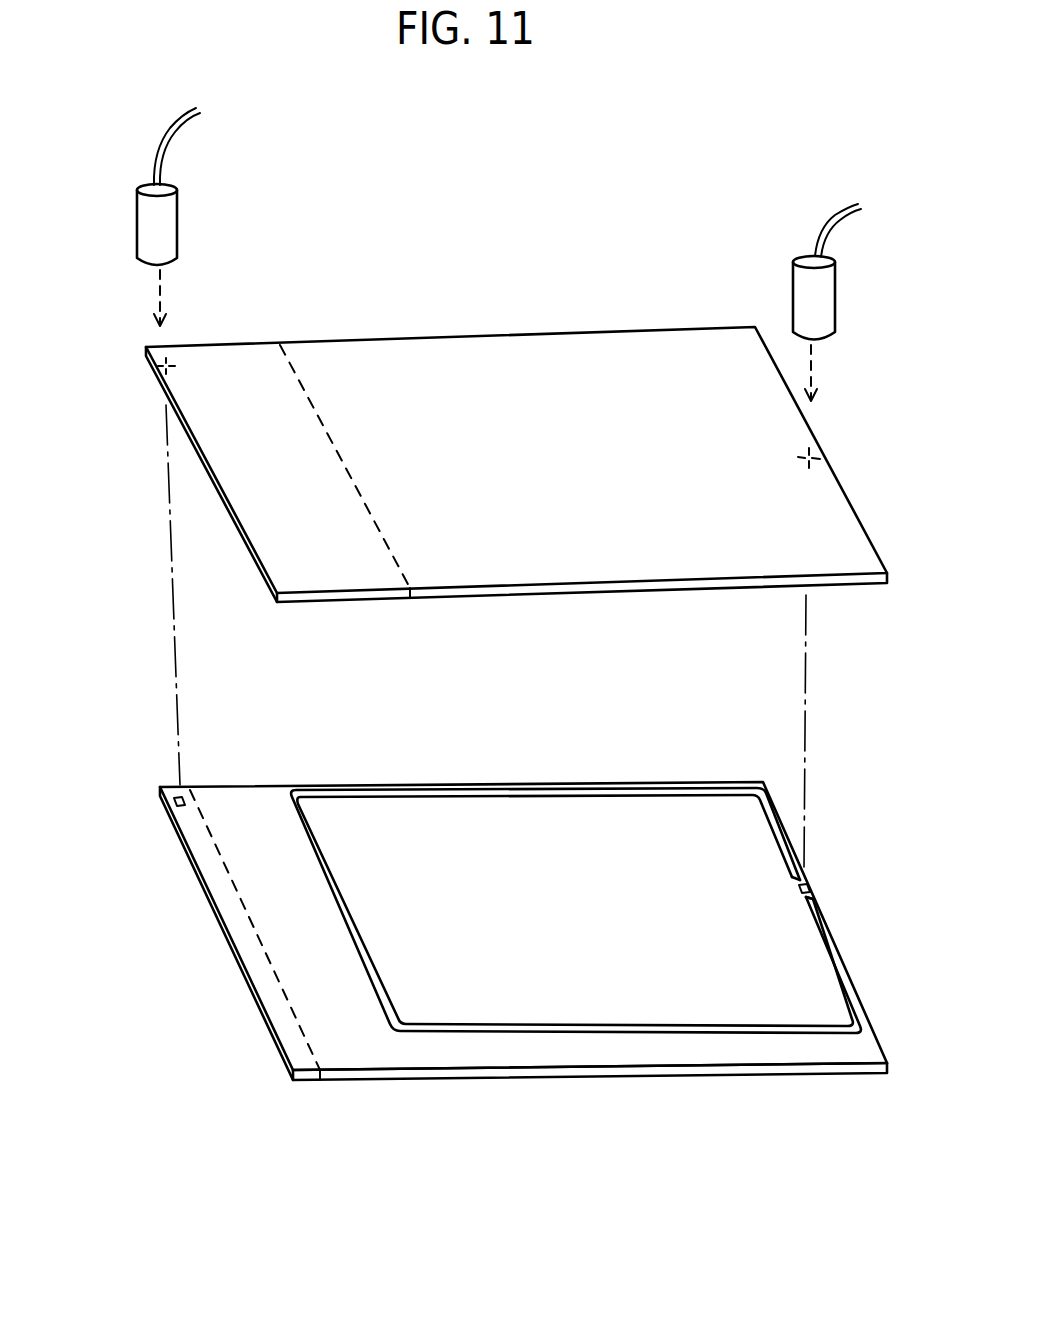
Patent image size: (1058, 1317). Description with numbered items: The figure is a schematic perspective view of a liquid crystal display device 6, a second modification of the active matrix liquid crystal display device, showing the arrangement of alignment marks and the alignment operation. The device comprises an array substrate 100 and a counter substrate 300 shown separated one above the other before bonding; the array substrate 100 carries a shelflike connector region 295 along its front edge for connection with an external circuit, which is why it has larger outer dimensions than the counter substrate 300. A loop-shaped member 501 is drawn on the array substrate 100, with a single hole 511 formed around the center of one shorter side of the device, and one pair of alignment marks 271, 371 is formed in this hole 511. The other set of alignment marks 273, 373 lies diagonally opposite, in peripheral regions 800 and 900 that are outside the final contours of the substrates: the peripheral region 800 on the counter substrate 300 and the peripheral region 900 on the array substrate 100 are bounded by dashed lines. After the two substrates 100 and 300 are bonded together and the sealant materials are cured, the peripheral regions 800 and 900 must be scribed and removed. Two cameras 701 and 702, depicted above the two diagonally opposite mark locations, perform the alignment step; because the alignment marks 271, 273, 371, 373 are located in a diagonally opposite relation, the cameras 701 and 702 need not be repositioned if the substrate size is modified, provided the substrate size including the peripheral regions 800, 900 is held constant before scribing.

The liquid crystal display device 6 is at (504, 178).
The array substrate 100 is at (250, 780).
The counter substrate 300 is at (188, 478).
The peripheral region 800 is at (270, 528).
The peripheral region 900 is at (252, 950).
The alignment mark 271 is at (828, 467).
The alignment mark 273 is at (157, 381).
The alignment mark 371 is at (810, 887).
The alignment mark 373 is at (175, 802).
The loop-shaped electrode 501 is at (535, 1033).
The hole 511 is at (810, 894).
The shelflike connector region 295 is at (665, 1052).
The camera 701 is at (795, 280).
The camera 702 is at (177, 239).